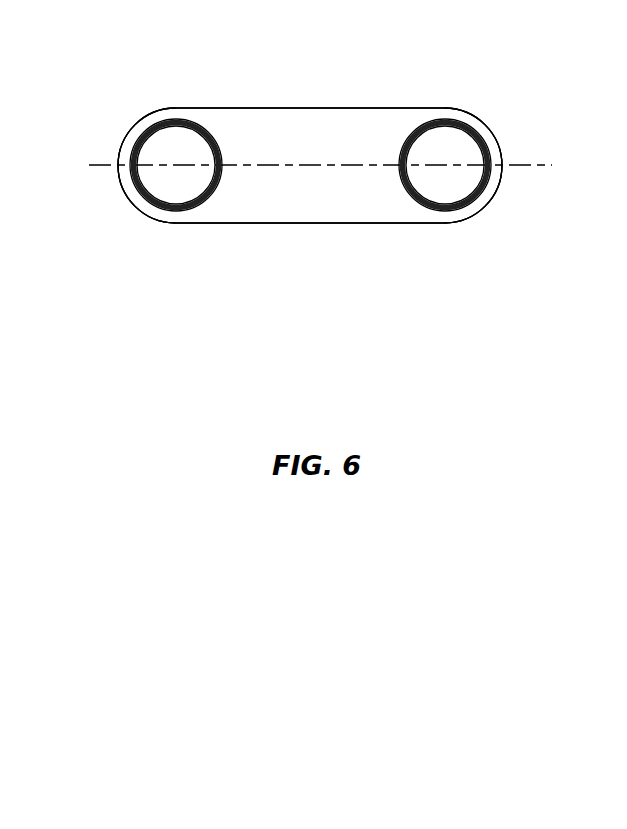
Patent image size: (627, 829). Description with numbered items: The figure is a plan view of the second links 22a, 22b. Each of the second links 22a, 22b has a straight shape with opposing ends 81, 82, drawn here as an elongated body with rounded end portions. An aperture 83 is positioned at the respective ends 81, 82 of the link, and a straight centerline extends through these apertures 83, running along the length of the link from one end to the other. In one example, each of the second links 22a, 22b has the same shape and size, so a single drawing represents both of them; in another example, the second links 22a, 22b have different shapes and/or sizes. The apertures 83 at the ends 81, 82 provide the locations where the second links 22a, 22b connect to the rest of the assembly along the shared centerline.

The second link 22a is at (386, 64).
The second link 22b is at (310, 165).
The end 81 is at (132, 204).
The end 82 is at (500, 184).
The aperture 83 is at (160, 123).